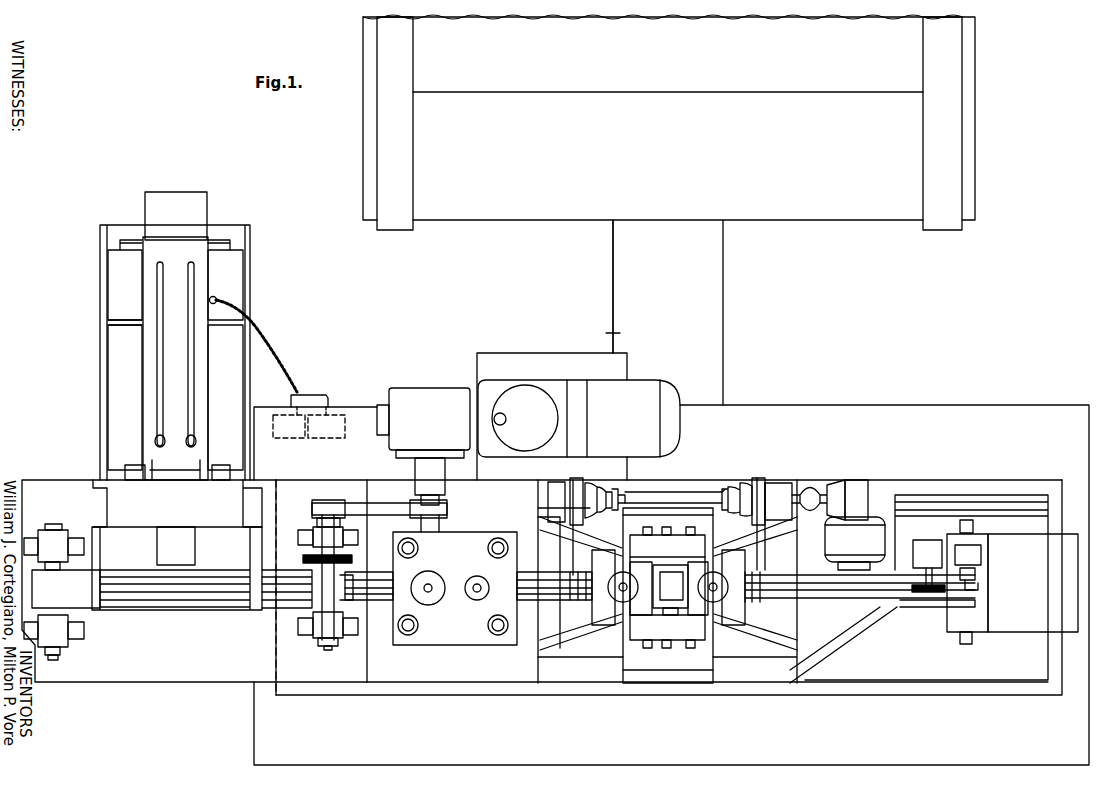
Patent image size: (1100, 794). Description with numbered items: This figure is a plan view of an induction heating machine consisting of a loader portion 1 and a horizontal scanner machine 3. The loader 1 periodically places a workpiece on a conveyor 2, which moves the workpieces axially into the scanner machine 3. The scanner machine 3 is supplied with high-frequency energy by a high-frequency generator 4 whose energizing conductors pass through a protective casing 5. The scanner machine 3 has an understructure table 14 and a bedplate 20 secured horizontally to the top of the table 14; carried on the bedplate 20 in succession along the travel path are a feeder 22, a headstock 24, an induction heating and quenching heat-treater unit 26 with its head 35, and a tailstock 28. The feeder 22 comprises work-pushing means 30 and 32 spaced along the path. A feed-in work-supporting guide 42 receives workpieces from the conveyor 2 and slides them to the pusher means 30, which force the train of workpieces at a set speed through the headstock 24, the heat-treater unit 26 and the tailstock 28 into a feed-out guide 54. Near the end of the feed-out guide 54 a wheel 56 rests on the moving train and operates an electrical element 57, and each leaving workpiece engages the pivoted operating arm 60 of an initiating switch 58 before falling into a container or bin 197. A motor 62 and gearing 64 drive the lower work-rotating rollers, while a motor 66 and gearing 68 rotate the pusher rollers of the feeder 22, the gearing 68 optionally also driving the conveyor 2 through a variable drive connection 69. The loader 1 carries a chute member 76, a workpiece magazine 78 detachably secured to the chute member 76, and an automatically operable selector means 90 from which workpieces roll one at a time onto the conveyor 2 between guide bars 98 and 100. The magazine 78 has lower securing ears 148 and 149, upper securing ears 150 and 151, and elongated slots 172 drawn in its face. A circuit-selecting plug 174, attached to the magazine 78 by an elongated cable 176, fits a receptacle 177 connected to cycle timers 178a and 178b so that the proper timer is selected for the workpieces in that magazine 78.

The loader portion 1 is at (163, 352).
The conveyor 2 is at (168, 609).
The horizontal scanner machine 3 is at (541, 405).
The high-frequency generator 4 is at (669, 210).
The protective casing 5 is at (608, 286).
The understructure table 14 is at (905, 408).
The bedplate 20 is at (930, 487).
The feeder 22 is at (455, 588).
The headstock 24 is at (580, 568).
The induction heating and quenching heat-treater unit 26 is at (668, 595).
The tailstock 28 is at (805, 580).
The work-pushing means 30 is at (436, 602).
The work-pushing means 32 is at (472, 598).
The head 35 is at (664, 560).
The feed-in work-supporting guide 42 is at (388, 603).
The feed-out guide 54 is at (818, 600).
The wheel 56 is at (928, 596).
The electrical element 57 is at (924, 540).
The initiating switch 58 is at (975, 547).
The pivoted operating arm 60 is at (980, 576).
The motor 62 is at (855, 543).
The gearing 64 is at (672, 498).
The motor 66 is at (579, 430).
The gearing 68 is at (445, 472).
The variable drive connection 69 is at (356, 510).
The chute member 76 is at (125, 338).
The workpiece magazine 78 is at (175, 336).
The selector means 90 is at (177, 503).
The guide bar 98 is at (292, 580).
The guide bar 100 is at (276, 620).
The securing ear 148 is at (142, 463).
The securing ear 149 is at (236, 455).
The securing ear 150 is at (234, 277).
The securing ear 151 is at (107, 277).
The slots 172 is at (187, 458).
The circuit-selecting plug 174 is at (324, 392).
The elongated cable 176 is at (274, 352).
The receptacle 177 is at (330, 410).
The cycle timer 178a is at (296, 442).
The cycle timer 178b is at (328, 438).
The container or bin 197 is at (1030, 636).